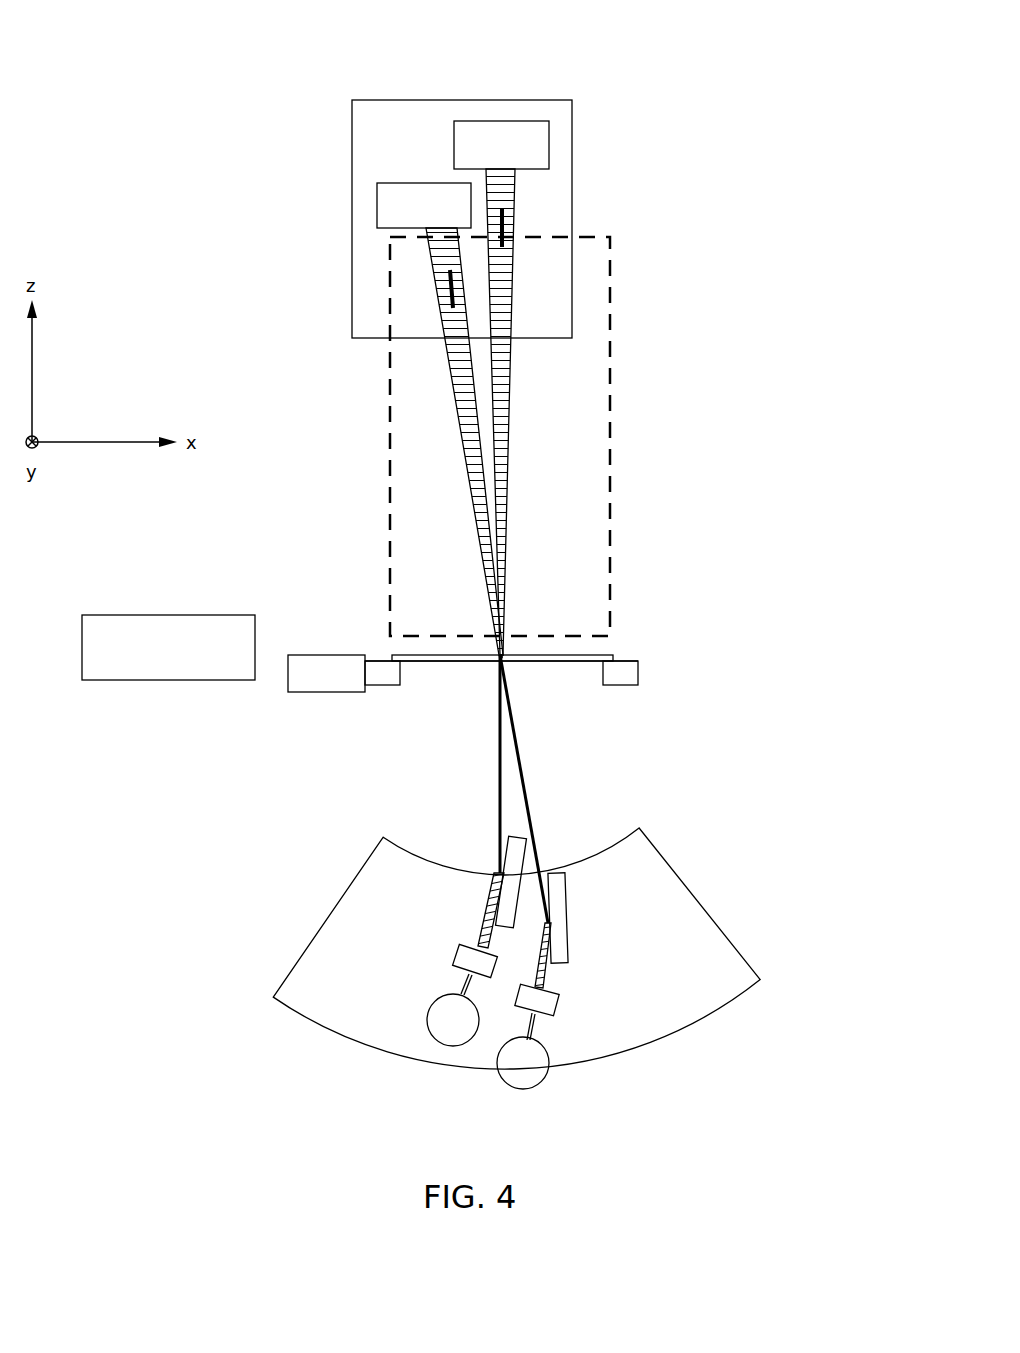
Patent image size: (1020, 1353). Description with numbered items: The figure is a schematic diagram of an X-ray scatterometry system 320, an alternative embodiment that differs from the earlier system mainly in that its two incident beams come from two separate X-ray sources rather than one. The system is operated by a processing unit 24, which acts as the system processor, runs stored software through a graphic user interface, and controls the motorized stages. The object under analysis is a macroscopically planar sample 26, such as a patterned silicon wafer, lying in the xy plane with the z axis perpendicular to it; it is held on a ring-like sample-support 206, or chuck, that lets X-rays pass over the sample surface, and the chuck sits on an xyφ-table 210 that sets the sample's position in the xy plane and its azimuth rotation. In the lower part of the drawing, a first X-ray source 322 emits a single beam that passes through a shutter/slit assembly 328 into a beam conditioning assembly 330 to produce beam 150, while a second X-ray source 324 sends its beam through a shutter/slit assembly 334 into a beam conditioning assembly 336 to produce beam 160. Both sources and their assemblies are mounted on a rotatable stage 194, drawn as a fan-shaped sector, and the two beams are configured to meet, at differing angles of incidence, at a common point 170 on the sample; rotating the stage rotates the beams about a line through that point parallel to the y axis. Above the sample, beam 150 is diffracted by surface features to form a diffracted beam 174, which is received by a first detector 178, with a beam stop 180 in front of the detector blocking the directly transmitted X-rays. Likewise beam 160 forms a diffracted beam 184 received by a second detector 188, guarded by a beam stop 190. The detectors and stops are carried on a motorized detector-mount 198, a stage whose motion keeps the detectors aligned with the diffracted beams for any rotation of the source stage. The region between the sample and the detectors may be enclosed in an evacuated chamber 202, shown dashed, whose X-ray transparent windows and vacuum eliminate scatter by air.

The processing unit 24 is at (162, 615).
The sample 26 is at (393, 655).
The beam 150 is at (498, 798).
The beam 160 is at (535, 810).
The common point 170 is at (500, 662).
The diffracted beam 174 is at (505, 458).
The first detector 178 is at (549, 142).
The beam stop 180 is at (513, 227).
The diffracted beam 184 is at (462, 422).
The second detector 188 is at (377, 200).
The beam stop 190 is at (447, 291).
The rotatable stage 194 is at (665, 1038).
The motorized detector-mount 198 is at (391, 100).
The evacuated chamber 202 is at (610, 370).
The sample-support 206 is at (378, 685).
The xyφ-table 210 is at (308, 692).
The X-ray scatterometry system 320 is at (712, 265).
The X-ray source 322 is at (443, 1044).
The X-ray source 324 is at (533, 1090).
The shutter/slit assembly 328 is at (458, 953).
The beam conditioning assembly 330 is at (498, 872).
The shutter/slit assembly 334 is at (557, 1003).
The beam conditioning assembly 336 is at (567, 925).